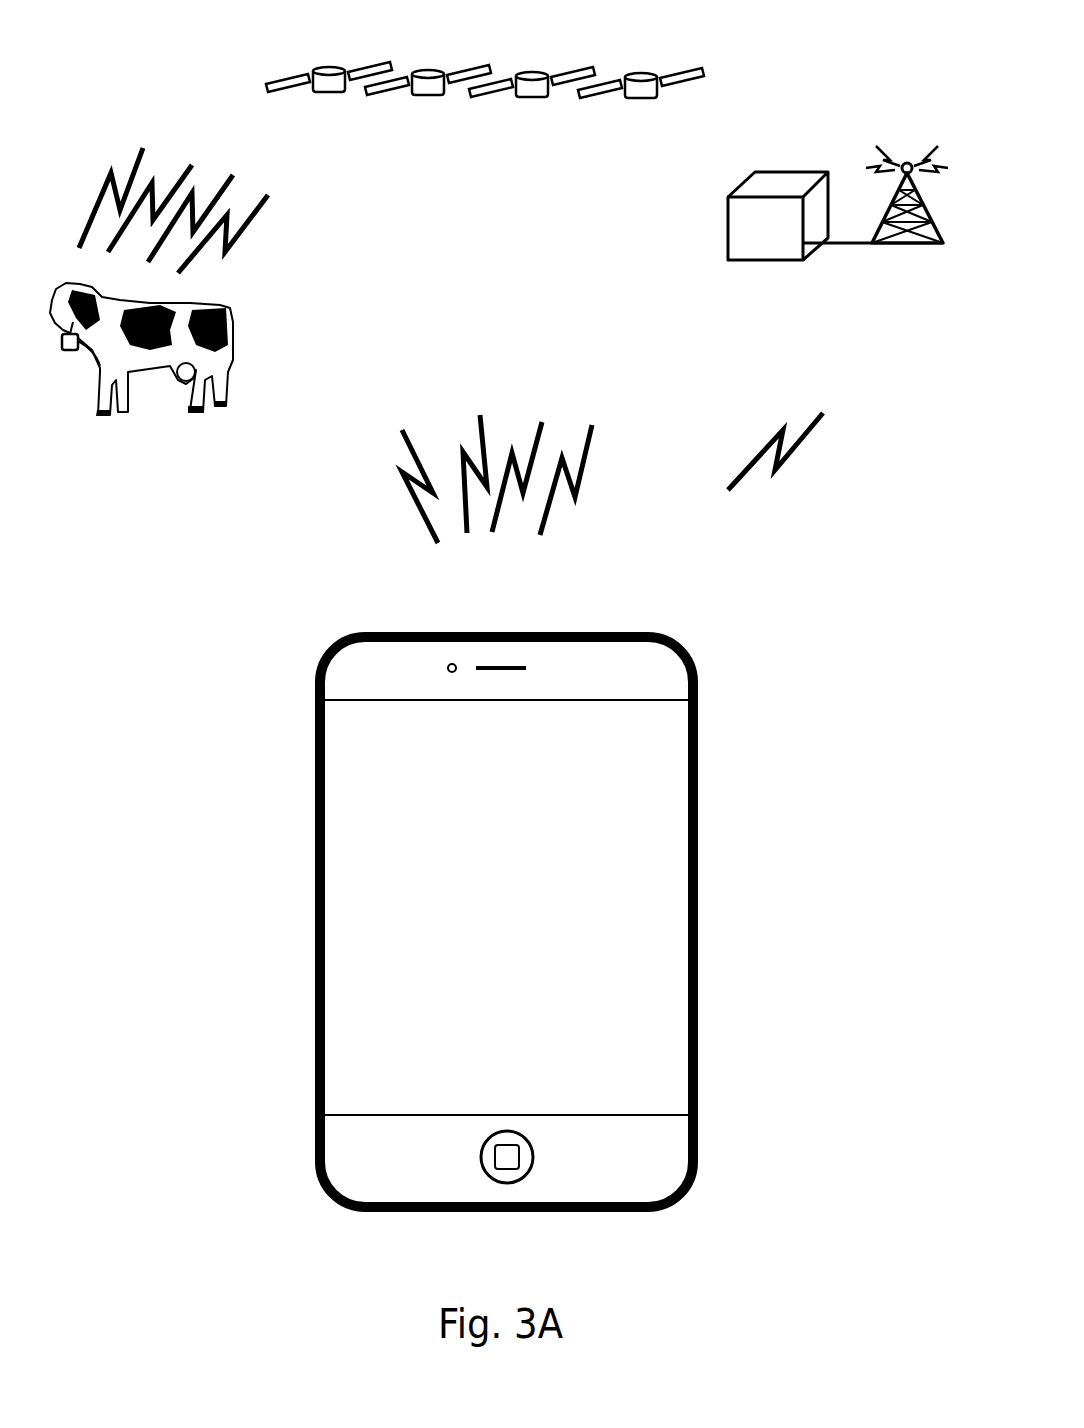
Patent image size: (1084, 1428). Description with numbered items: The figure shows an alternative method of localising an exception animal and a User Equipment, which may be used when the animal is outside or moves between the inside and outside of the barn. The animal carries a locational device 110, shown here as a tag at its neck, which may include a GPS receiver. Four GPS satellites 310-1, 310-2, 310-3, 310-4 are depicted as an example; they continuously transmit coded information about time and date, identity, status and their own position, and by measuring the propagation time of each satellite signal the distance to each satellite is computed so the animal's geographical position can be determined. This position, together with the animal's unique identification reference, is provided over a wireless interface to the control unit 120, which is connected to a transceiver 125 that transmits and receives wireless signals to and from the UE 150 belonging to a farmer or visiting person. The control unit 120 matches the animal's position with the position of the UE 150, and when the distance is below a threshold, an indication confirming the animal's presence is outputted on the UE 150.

The satellite 310-1 is at (288, 80).
The satellite 310-2 is at (395, 82).
The satellite 310-3 is at (500, 86).
The satellite 310-4 is at (613, 86).
The locational device 110 is at (66, 350).
The control unit 120 is at (791, 247).
The transceiver 125 is at (905, 162).
The User Equipment 150 is at (598, 630).